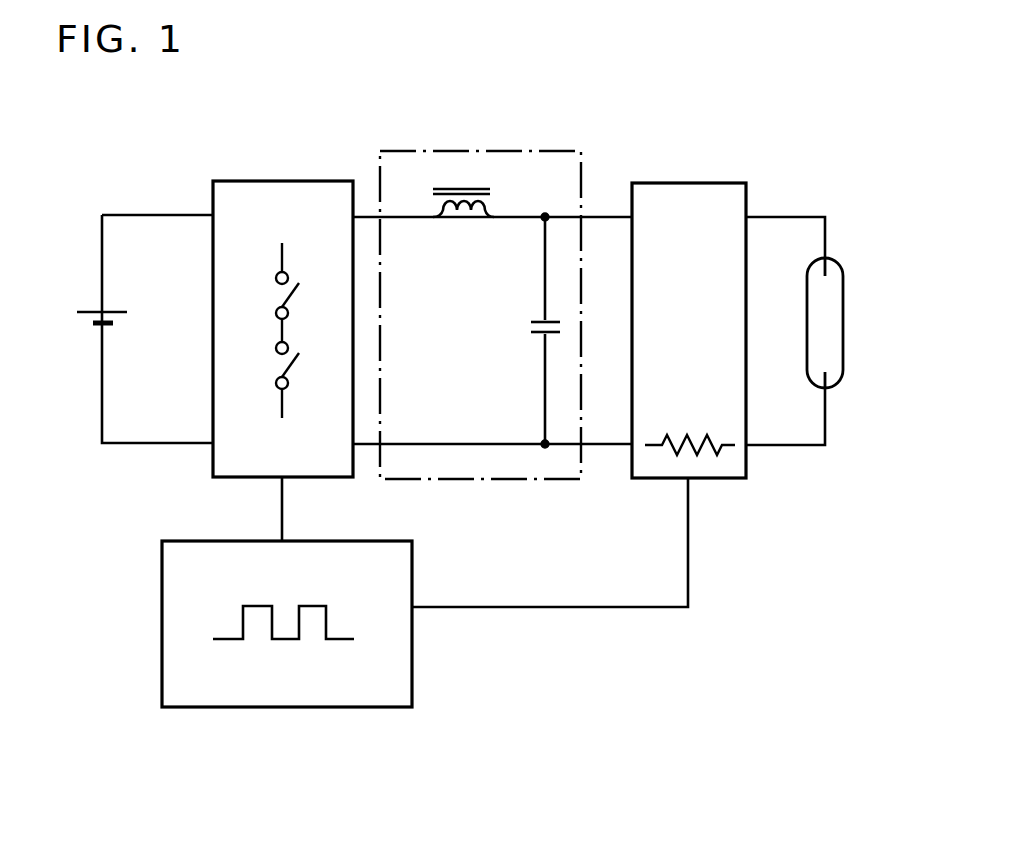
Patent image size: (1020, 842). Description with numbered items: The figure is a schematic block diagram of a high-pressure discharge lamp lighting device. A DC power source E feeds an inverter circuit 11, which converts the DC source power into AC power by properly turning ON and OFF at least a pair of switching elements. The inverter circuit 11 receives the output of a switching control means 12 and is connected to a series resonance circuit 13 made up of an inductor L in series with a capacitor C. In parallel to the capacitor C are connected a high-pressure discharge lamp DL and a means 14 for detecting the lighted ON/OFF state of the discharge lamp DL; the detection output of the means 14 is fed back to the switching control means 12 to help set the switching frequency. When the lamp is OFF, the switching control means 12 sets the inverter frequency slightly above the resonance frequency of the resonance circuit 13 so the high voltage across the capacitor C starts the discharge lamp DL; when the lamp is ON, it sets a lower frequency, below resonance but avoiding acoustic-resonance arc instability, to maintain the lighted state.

The inverter circuit 11 is at (272, 181).
The switching control means 12 is at (313, 700).
The series resonance circuit 13 is at (510, 151).
The means for detecting lighted ON/OFF state of the discharge lamp 14 is at (683, 183).
The DC power source E is at (131, 323).
The inductor L is at (463, 228).
The capacitor C is at (526, 330).
The high-pressure discharge lamp DL is at (843, 345).